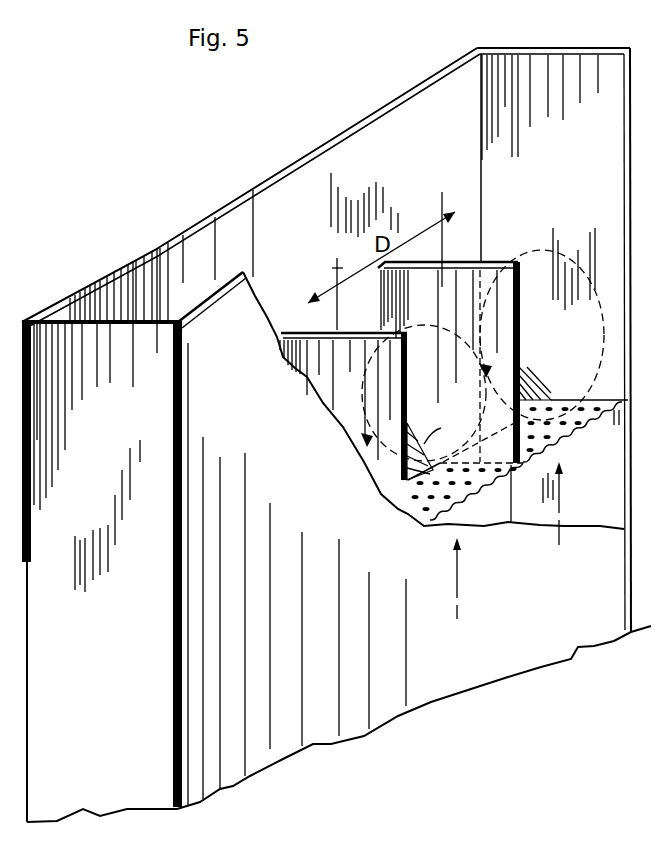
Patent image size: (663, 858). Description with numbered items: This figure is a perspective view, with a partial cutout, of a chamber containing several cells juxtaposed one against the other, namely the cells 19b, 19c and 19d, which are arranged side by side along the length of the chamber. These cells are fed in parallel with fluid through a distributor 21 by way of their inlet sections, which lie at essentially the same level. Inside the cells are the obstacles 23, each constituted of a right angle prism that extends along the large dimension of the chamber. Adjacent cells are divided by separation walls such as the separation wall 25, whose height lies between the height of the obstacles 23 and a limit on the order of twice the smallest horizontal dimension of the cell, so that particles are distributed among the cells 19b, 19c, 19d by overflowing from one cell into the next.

The cell 19b is at (343, 406).
The cell 19c is at (393, 322).
The cell 19d is at (484, 262).
The distributor 21 is at (597, 425).
The obstacle 23 is at (479, 452).
The separation wall 25 is at (520, 320).